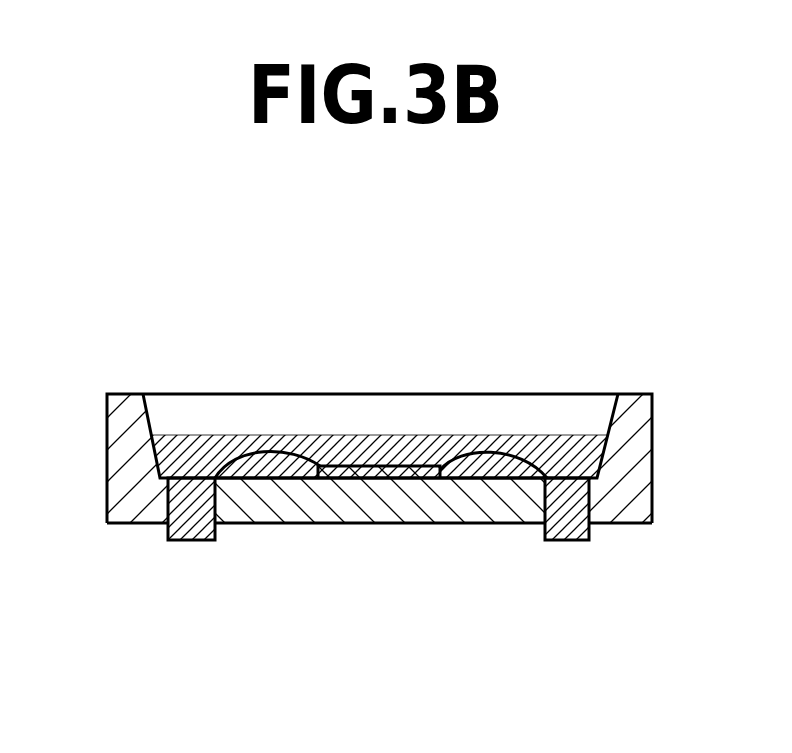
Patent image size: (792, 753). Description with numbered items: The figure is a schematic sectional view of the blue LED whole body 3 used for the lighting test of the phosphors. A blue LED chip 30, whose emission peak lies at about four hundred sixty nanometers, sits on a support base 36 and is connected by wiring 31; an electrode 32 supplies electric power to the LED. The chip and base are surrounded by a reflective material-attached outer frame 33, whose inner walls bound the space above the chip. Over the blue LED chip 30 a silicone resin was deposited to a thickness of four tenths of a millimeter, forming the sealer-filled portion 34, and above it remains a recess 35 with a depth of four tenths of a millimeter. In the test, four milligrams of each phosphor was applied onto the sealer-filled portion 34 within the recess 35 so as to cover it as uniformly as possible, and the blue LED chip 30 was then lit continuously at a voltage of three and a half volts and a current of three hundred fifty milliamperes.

The LED whole body 3 is at (60, 292).
The blue LED chip 30 is at (382, 472).
The wiring 31 is at (466, 452).
The electrode 32 is at (592, 530).
The reflective material-attached outer frame 33 is at (637, 421).
The sealer-filled portion 34 is at (195, 437).
The recess 35 is at (309, 417).
The support base 36 is at (275, 510).